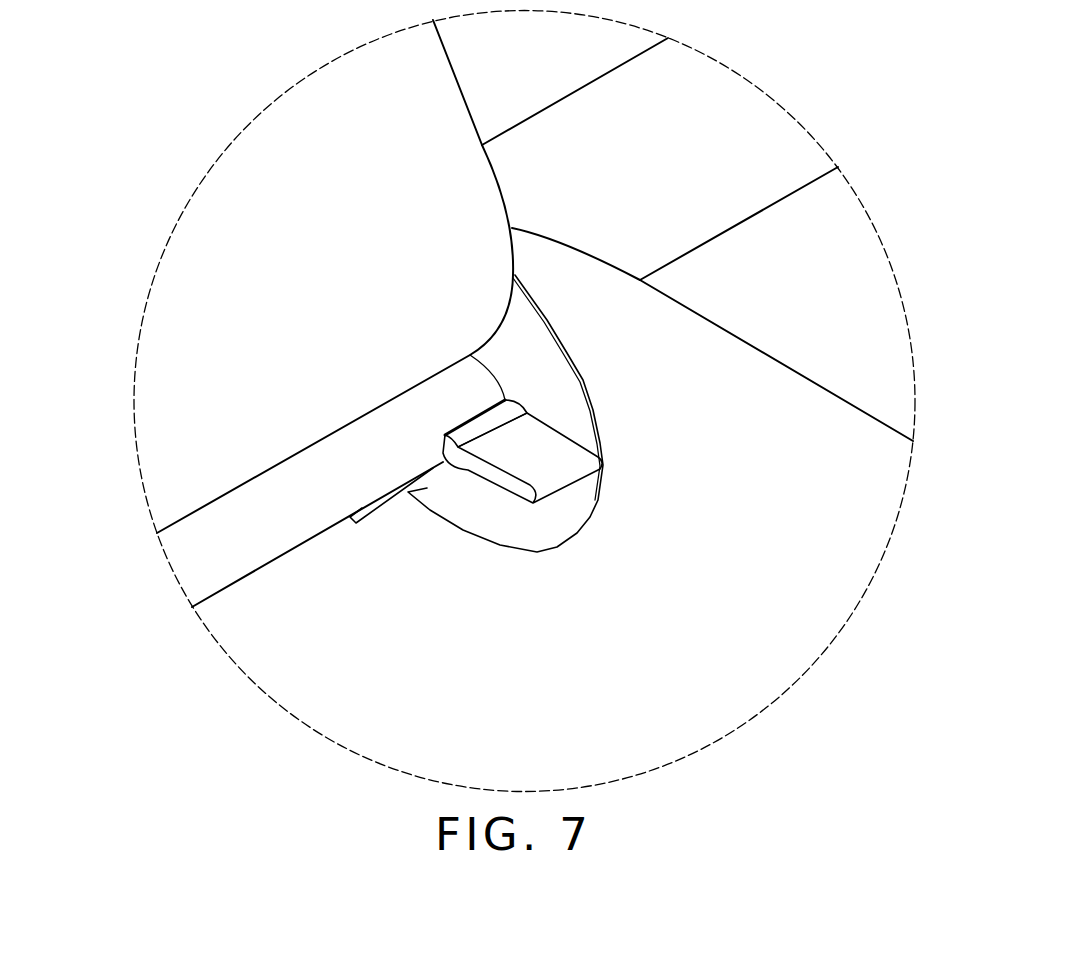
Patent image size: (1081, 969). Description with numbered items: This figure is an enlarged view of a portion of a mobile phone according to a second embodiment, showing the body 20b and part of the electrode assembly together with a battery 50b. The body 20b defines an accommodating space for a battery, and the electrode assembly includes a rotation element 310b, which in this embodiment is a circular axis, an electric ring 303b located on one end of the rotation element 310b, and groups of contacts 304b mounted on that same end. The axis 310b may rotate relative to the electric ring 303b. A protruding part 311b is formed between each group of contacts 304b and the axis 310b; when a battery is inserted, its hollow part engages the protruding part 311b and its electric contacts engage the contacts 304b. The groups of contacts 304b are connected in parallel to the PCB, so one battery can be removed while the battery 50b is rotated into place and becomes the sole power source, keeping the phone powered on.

The battery 50b is at (343, 117).
The body 20b is at (785, 435).
The rotation element 310b is at (258, 520).
The electric ring 303b is at (492, 425).
The protruding part 311b is at (492, 430).
The contacts 304b is at (498, 477).